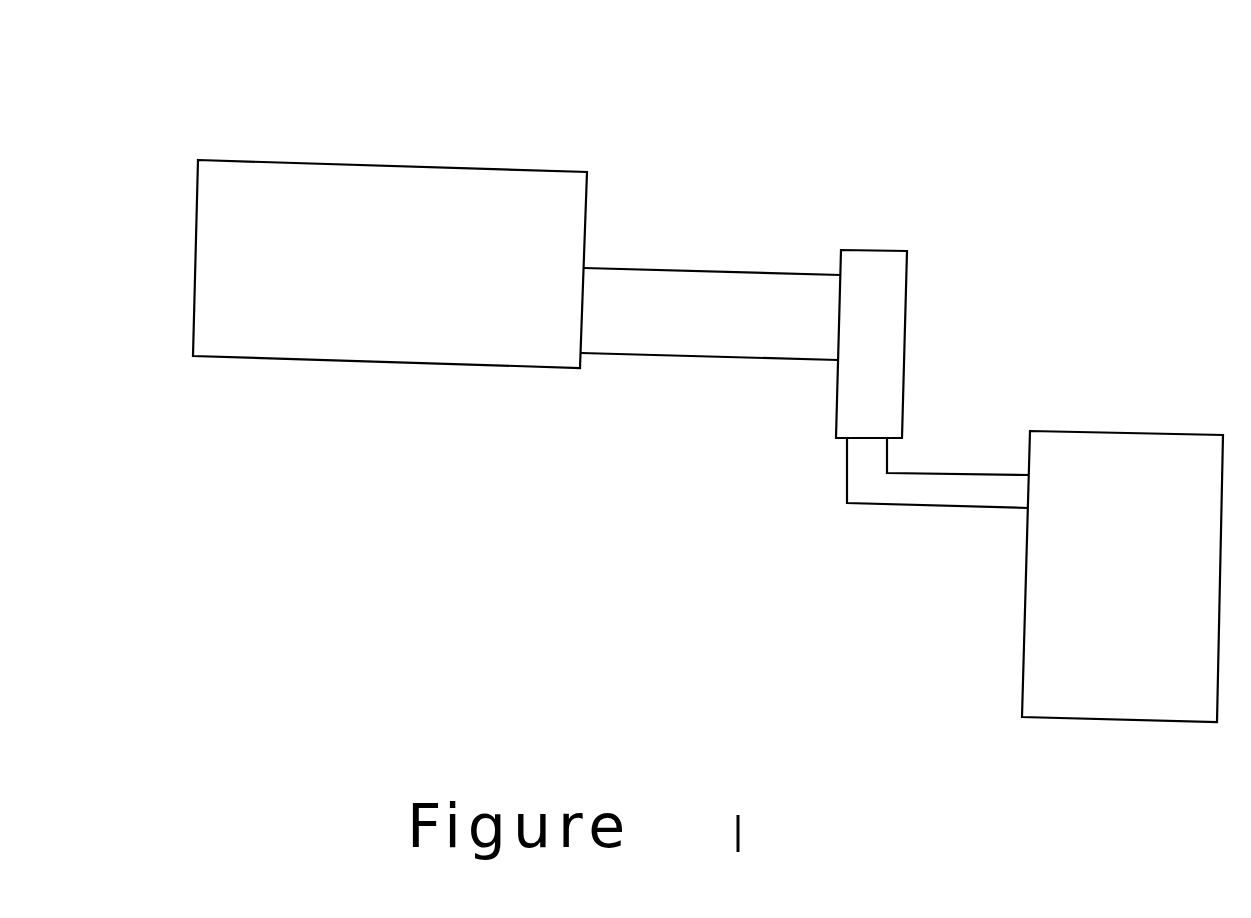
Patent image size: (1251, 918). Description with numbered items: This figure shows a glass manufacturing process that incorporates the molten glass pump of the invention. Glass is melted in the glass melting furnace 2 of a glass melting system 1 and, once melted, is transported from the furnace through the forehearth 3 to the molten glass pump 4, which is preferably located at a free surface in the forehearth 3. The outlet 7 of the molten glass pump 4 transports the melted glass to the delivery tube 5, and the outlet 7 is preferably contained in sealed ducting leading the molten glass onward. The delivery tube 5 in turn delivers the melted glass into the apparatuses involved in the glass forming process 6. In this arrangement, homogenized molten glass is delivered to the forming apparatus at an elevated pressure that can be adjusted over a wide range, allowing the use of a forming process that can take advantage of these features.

The glass melting system 1 is at (167, 110).
The glass melting furnace 2 is at (493, 365).
The forehearth 3 is at (710, 272).
The molten glass pump 4 is at (875, 248).
The delivery tube 5 is at (865, 505).
The glass forming process 6 is at (1022, 692).
The outlet 7 is at (865, 440).